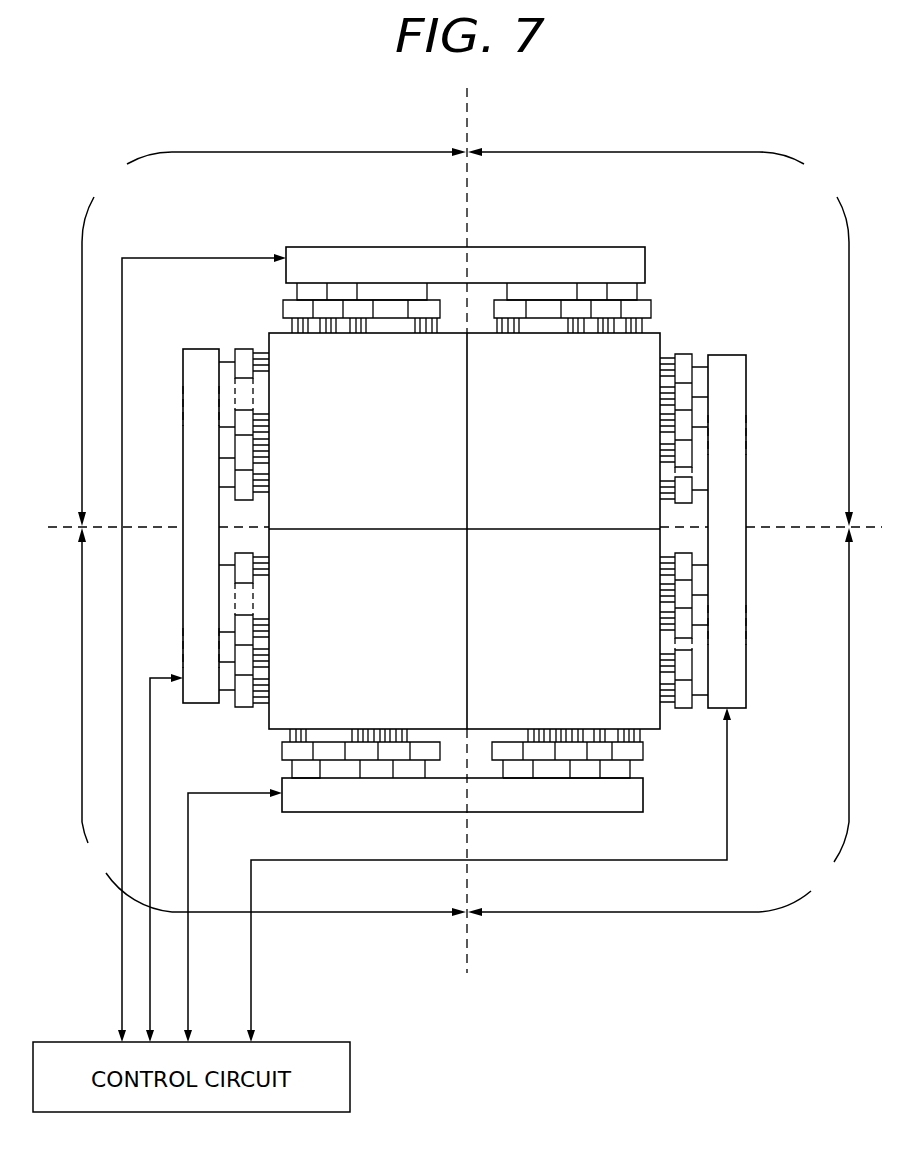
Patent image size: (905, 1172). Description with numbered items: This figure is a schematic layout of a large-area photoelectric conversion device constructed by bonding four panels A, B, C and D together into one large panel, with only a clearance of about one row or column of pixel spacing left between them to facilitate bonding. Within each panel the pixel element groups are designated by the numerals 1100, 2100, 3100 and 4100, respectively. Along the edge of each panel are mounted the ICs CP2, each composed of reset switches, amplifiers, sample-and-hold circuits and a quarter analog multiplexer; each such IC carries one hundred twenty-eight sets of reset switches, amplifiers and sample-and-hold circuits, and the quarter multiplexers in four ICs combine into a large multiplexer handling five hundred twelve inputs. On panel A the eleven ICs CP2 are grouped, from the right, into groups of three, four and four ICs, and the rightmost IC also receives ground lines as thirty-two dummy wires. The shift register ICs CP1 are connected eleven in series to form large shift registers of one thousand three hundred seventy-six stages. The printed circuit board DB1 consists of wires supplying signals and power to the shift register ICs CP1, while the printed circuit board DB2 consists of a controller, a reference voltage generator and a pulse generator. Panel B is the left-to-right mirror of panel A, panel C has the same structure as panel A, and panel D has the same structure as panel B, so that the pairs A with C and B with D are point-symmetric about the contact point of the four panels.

The first display panel section 1100 is at (580, 453).
The second display panel section 2100 is at (388, 453).
The third display panel section 3100 is at (388, 639).
The fourth display panel section 4100 is at (580, 639).
The first driver board DB1 is at (190, 347).
The second driver board DB2 is at (645, 263).
The first chip package CP1 is at (242, 348).
The second chip package CP2 is at (283, 307).
The region A is at (821, 191).
The region B is at (108, 184).
The region C is at (95, 864).
The region D is at (815, 890).